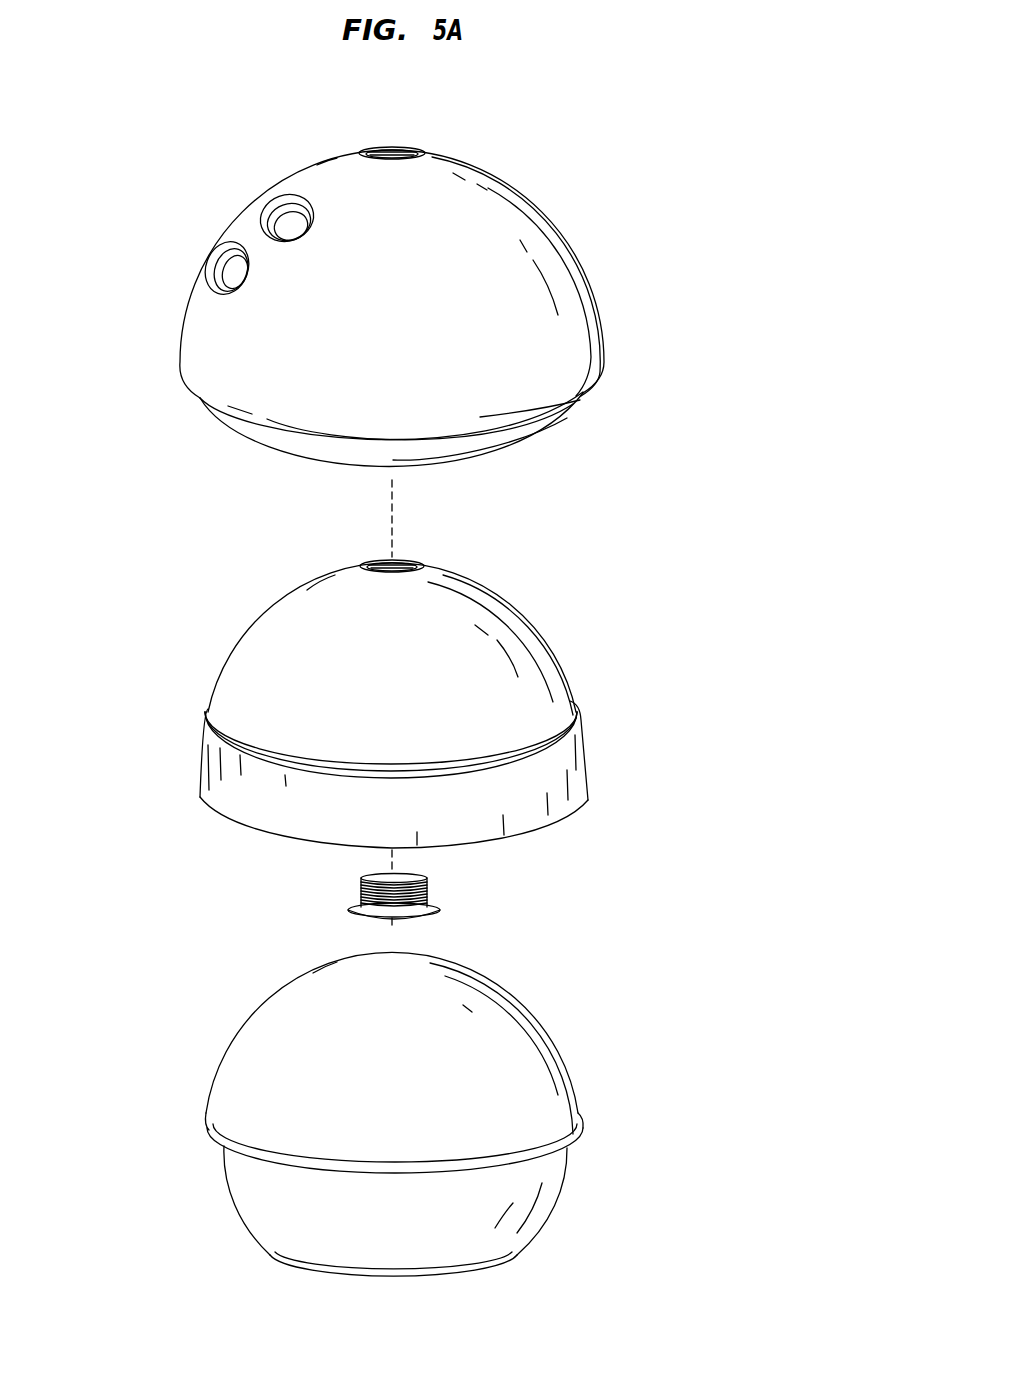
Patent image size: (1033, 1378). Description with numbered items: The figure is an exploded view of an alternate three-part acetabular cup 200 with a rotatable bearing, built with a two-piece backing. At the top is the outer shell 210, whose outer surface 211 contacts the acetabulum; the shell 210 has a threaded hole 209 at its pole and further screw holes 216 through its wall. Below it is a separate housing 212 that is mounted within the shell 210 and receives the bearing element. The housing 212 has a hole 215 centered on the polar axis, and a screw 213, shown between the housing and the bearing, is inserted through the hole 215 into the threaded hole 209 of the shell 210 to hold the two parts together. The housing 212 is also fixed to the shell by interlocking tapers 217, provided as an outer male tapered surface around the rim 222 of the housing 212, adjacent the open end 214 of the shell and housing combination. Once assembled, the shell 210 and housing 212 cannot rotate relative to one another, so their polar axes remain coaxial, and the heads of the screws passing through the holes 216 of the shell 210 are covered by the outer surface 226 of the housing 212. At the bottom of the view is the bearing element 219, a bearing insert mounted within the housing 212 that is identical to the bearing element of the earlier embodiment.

The acetabular cup 200 is at (676, 412).
The threaded hole 209 is at (383, 152).
The outer shell 210 is at (433, 148).
The outer surface 211 is at (323, 188).
The housing 212 is at (508, 602).
The screw 213 is at (357, 902).
The open end 214 is at (262, 476).
The hole 215 is at (407, 562).
The holes 216 is at (228, 272).
The interlocking tapers 217 is at (200, 772).
The bearing element 219 is at (578, 1083).
The rim 222 is at (588, 780).
The outer surface 226 is at (525, 698).